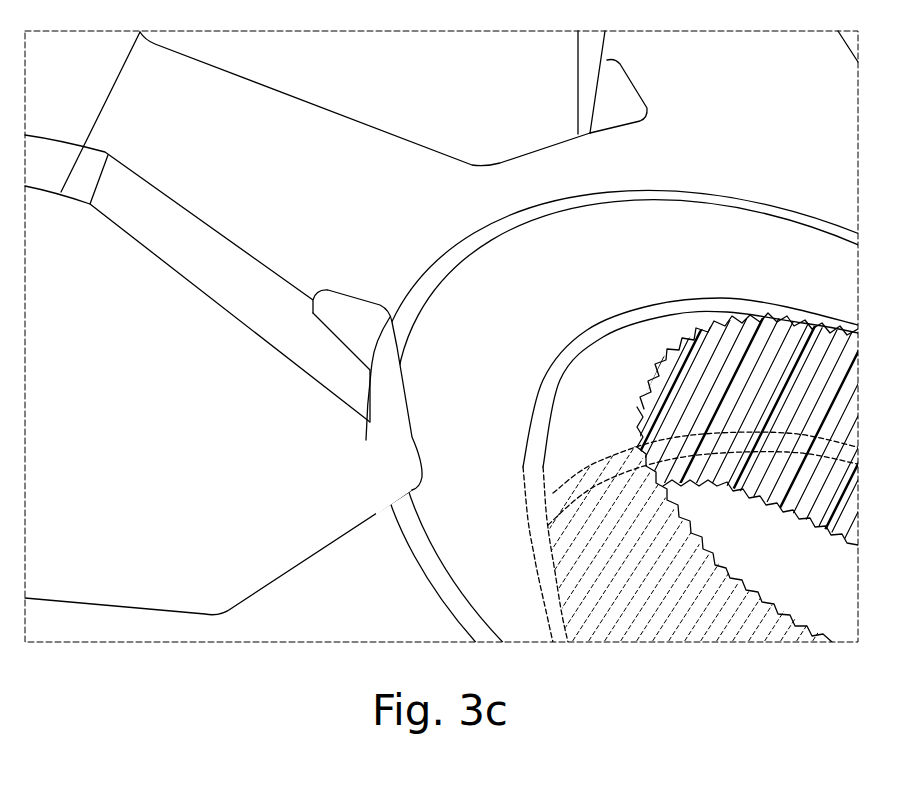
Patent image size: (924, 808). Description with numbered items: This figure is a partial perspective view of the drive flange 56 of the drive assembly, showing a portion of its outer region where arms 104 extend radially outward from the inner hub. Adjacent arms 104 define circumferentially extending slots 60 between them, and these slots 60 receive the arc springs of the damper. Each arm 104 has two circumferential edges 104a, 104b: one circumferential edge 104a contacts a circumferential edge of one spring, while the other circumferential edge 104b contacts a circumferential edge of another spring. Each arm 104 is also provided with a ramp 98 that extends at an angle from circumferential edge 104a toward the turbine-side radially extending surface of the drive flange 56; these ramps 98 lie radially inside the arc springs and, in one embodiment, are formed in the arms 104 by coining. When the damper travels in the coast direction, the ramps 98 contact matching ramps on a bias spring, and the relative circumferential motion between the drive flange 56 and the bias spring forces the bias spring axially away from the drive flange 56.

The drive flange 56 is at (163, 478).
The circumferentially extending slot 60 is at (471, 137).
The ramp 98 is at (610, 110).
The arm 104 is at (340, 157).
The circumferential edge 104a is at (258, 297).
The circumferential edge 104b is at (390, 133).